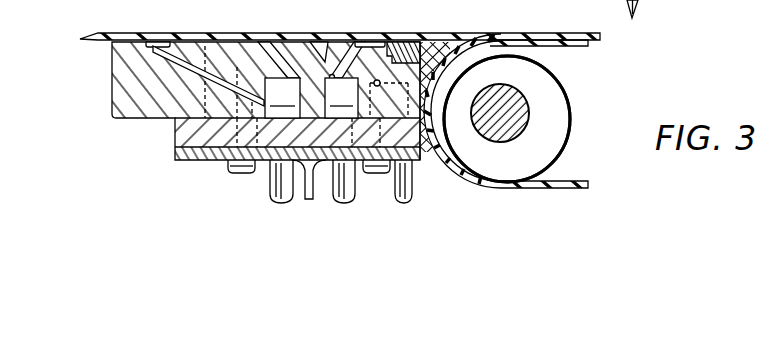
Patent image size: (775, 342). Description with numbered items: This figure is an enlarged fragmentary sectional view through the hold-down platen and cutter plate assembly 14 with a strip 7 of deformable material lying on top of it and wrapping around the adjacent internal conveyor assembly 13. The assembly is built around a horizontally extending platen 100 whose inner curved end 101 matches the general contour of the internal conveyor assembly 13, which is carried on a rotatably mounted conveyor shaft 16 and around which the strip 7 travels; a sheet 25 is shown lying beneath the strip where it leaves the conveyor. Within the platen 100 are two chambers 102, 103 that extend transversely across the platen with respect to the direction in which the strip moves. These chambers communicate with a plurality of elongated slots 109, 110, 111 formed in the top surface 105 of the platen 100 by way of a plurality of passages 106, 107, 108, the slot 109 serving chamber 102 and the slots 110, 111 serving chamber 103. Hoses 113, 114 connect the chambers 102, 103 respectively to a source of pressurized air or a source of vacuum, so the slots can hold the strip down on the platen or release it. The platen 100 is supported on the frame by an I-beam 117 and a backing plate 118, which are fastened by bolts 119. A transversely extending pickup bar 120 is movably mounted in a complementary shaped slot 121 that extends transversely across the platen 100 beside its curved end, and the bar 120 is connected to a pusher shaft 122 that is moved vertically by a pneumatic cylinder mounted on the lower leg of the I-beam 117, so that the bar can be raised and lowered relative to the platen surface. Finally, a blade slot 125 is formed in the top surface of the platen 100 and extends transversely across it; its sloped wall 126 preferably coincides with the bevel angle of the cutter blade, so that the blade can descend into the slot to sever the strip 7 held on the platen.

The strip of deformable material 7 is at (535, 33).
The internal conveyor assembly 13 is at (572, 163).
The hold-down platen and cutter plate assembly 14 is at (106, 141).
The conveyor shaft 16 is at (522, 113).
The sheet 25 is at (558, 47).
The platen 100 is at (125, 81).
The inner curved end 101 is at (463, 70).
The chamber 102 is at (341, 98).
The chamber 103 is at (282, 98).
The top surface 105 is at (213, 42).
The passage 106 is at (359, 41).
The passage 107 is at (268, 60).
The passage 108 is at (178, 48).
The elongated slot 109 is at (357, 41).
The elongated slot 110 is at (268, 41).
The elongated slot 111 is at (153, 41).
The hose 113 is at (347, 191).
The hose 114 is at (278, 194).
The I-beam 117 is at (187, 161).
The backing plate 118 is at (182, 138).
The bolt 119 is at (236, 172).
The pickup bar 120 is at (412, 41).
The slot 121 is at (438, 43).
The pusher shaft 122 is at (412, 190).
The blade slot 125 is at (318, 41).
The sloped wall 126 is at (331, 76).